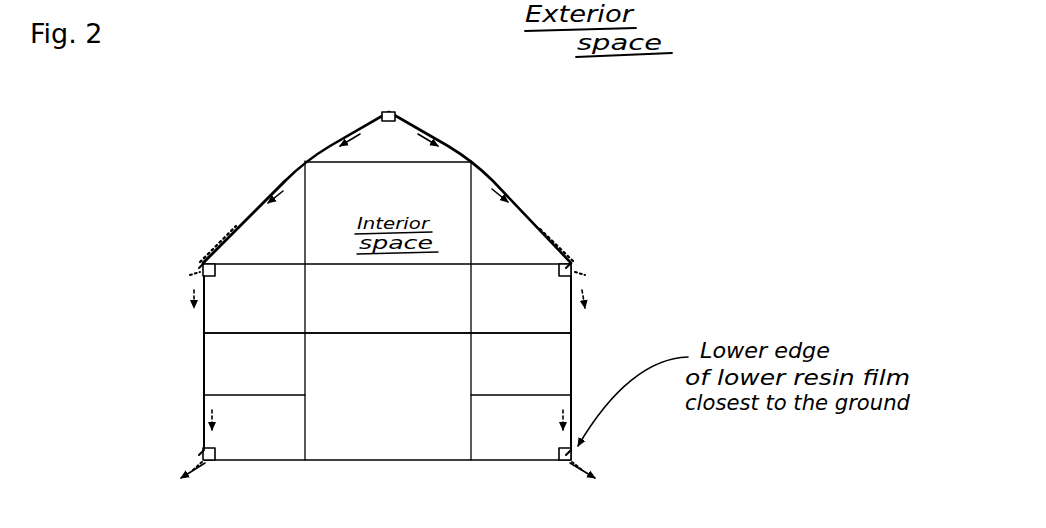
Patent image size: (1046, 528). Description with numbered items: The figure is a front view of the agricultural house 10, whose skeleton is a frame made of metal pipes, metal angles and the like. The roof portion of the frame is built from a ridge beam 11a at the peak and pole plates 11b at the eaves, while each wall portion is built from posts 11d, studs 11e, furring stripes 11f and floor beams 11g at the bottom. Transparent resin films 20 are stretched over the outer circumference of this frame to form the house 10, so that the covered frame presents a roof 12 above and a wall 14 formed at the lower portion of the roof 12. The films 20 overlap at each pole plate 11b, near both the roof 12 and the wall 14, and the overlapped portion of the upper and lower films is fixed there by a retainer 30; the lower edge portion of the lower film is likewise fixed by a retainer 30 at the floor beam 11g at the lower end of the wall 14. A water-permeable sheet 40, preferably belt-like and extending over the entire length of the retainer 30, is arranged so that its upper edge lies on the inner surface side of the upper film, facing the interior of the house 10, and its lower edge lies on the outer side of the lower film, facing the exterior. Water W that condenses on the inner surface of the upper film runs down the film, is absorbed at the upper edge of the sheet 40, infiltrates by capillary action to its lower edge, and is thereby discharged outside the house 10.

The house 10 is at (537, 138).
The ridge beam 11a is at (388, 112).
The pole plate 11b is at (216, 278).
The post 11d is at (204, 367).
The stud 11e is at (306, 367).
The furring stripe 11f is at (400, 333).
The floor beam 11g is at (216, 455).
The roof 12 is at (312, 150).
The wall 14 is at (188, 339).
The transparent resin film 20 is at (254, 205).
The retainer 30 is at (190, 264).
The water-permeable sheet 40 is at (190, 276).
The water W is at (283, 191).